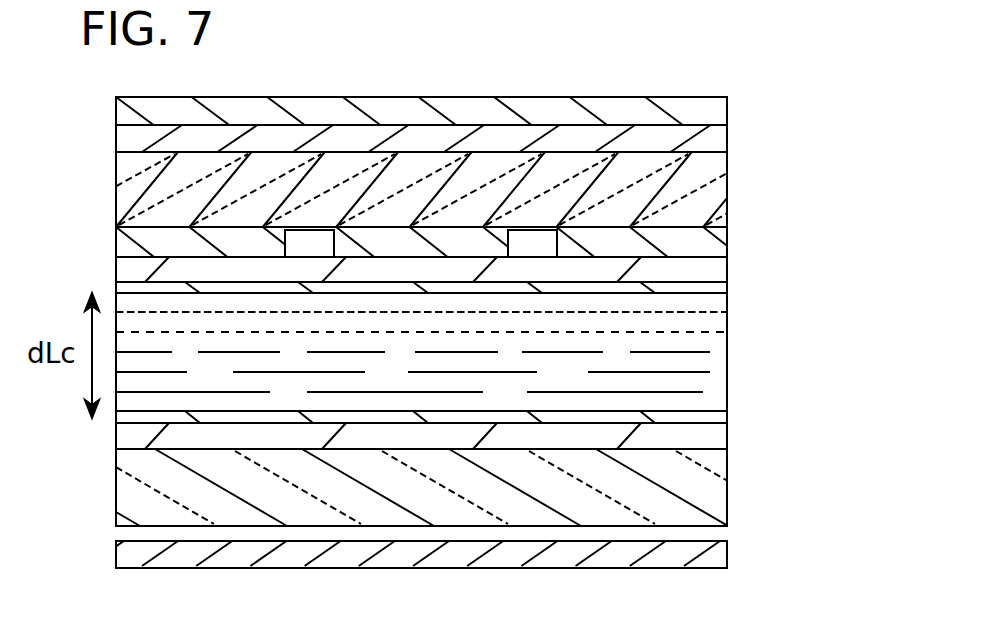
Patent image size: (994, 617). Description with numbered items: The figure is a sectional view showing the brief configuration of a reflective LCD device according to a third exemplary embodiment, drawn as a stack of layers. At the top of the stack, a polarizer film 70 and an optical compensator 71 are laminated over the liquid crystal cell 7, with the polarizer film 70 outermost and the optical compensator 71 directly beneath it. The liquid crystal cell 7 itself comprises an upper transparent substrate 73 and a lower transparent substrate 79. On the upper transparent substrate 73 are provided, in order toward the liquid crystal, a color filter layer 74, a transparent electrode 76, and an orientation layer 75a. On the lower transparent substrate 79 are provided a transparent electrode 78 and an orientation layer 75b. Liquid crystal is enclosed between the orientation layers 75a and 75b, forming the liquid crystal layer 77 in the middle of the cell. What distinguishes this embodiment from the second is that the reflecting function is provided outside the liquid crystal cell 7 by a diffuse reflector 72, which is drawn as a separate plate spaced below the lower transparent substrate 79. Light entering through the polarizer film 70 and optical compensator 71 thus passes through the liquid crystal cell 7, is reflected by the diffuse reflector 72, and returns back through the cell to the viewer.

The liquid crystal cell 7 is at (850, 172).
The polarizer film 70 is at (703, 117).
The optical compensator 71 is at (703, 146).
The diffuse reflector 72 is at (712, 552).
The upper transparent substrate 73 is at (703, 193).
The color filter layer 74 is at (710, 245).
The orientation layer 75a is at (708, 290).
The orientation layer 75b is at (710, 418).
The transparent electrode 76 is at (703, 265).
The liquid crystal layer 77 is at (710, 377).
The transparent electrode 78 is at (710, 443).
The lower transparent substrate 79 is at (705, 492).